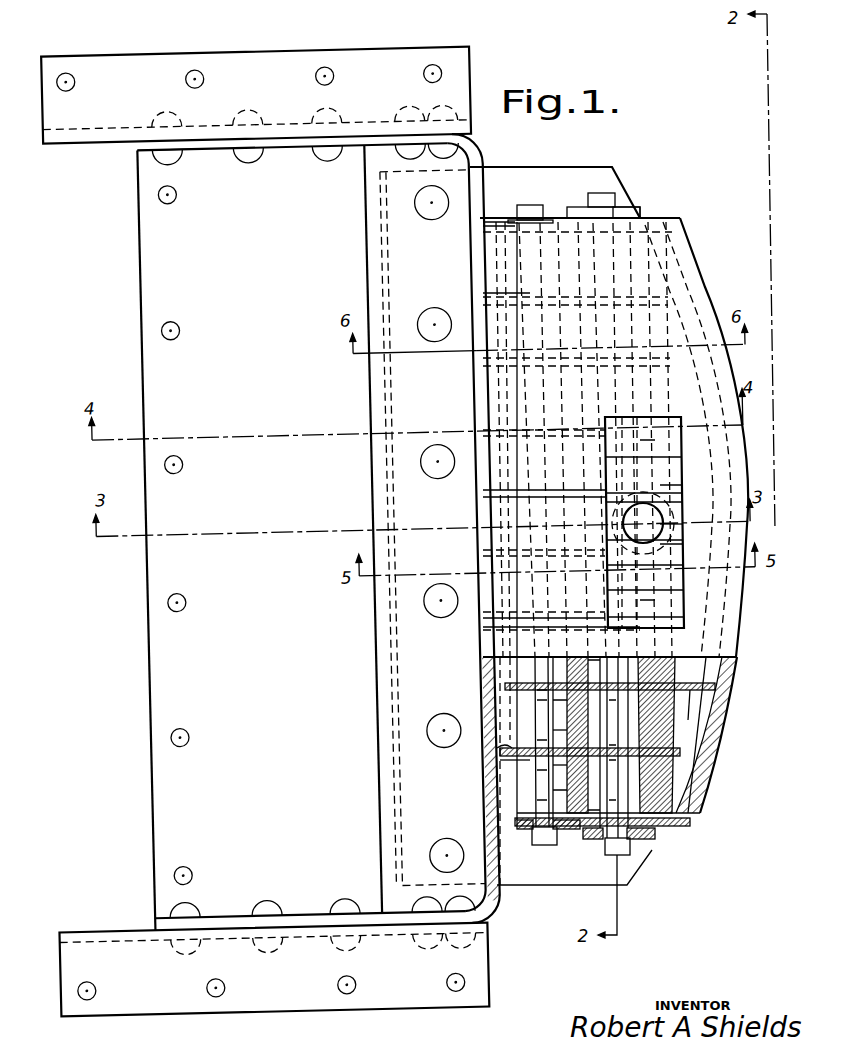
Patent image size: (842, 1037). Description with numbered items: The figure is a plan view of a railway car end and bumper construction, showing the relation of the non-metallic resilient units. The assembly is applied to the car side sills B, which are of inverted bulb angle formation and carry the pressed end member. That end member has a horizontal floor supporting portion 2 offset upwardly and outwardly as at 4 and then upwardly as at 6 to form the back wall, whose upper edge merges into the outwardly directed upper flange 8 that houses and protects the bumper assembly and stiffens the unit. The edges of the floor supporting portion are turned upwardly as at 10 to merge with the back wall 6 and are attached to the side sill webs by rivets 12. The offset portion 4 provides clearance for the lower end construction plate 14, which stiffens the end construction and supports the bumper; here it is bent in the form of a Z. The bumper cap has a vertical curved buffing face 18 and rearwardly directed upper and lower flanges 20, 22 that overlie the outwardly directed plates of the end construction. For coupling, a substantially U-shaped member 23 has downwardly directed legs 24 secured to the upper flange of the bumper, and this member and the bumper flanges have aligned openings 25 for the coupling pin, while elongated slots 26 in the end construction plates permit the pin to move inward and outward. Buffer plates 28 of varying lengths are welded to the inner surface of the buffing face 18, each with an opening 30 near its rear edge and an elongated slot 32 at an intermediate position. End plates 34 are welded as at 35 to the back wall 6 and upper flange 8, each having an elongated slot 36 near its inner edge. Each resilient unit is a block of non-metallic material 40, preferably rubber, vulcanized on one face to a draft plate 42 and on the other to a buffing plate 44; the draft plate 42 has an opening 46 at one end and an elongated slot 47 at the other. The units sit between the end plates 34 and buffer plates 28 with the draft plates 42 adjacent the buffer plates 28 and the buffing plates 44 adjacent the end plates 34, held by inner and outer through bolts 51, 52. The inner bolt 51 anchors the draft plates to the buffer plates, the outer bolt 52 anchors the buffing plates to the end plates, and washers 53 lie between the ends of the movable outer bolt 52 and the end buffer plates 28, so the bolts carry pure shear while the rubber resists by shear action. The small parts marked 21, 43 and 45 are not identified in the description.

The car side sills B is at (258, 60).
The horizontal floor supporting portion 2 is at (160, 680).
The upwardly offset portion 4 is at (402, 685).
The back wall 6 is at (476, 216).
The upper flange 8 is at (490, 394).
The upwardly directed edge portion 10 is at (300, 150).
The rivets 12 is at (182, 157).
The lower end construction plate 14 is at (557, 176).
The curved buffing face 18 is at (737, 676).
The upper flange of bumper cap 20 is at (673, 322).
The spacer 21 is at (700, 705).
The lower flange of bumper cap 22 is at (690, 770).
The U-shaped member 23 is at (666, 481).
The downwardly directed legs 24 is at (655, 441).
The aligned openings 25 is at (643, 523).
The elongated slots 26 is at (668, 524).
The buffer plates 28 is at (672, 484).
The opening 30 is at (527, 831).
The elongated slot 32 is at (607, 766).
The end plates 34 is at (683, 749).
The weld 35 is at (497, 753).
The elongated slot 36 is at (500, 770).
The block of non-metallic material 40 is at (684, 797).
The draft plate 42 is at (503, 691).
The buffing plate 44 is at (690, 747).
The spacer 43 is at (559, 737).
The spacer 45 is at (559, 770).
The opening 46 is at (559, 752).
The elongated slot 47 is at (614, 736).
The inner through bolt 51 is at (528, 206).
The outer through bolt 52 is at (602, 196).
The washers 53 is at (633, 211).